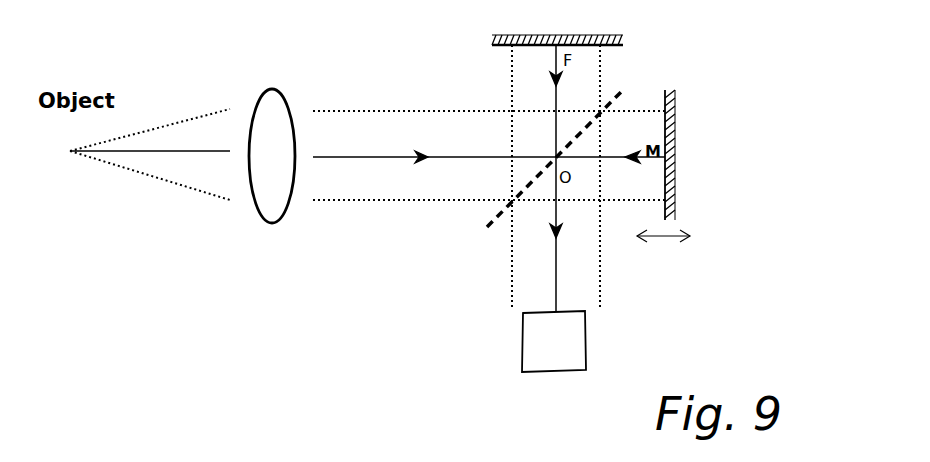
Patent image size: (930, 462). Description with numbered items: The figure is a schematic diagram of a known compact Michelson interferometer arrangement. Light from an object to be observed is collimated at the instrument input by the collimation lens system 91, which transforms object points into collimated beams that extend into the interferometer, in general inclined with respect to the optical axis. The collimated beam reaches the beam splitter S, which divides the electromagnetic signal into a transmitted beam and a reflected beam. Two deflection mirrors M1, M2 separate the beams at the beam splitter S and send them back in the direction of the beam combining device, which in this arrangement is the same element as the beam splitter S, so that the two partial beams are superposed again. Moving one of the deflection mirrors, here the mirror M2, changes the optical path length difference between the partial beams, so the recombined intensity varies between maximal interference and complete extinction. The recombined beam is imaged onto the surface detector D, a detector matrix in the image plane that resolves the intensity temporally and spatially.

The collimation lens system 91 is at (284, 90).
The deflection mirror M1 is at (603, 35).
The movable deflection mirror M2 is at (683, 198).
The beam splitter S is at (626, 93).
The surface detector D is at (554, 341).